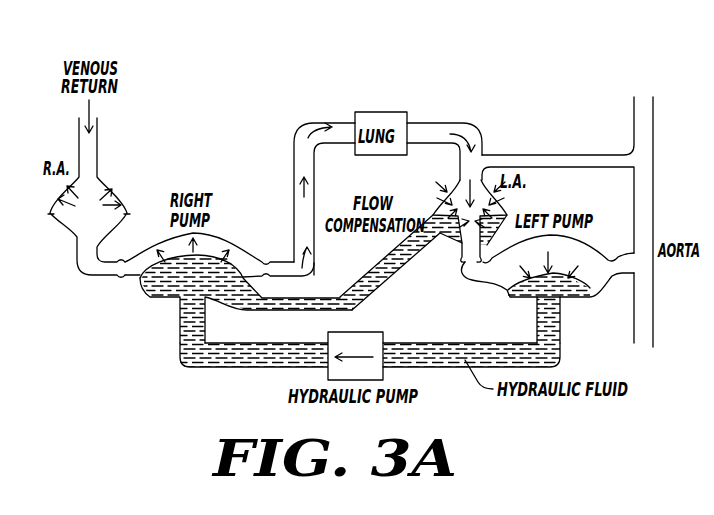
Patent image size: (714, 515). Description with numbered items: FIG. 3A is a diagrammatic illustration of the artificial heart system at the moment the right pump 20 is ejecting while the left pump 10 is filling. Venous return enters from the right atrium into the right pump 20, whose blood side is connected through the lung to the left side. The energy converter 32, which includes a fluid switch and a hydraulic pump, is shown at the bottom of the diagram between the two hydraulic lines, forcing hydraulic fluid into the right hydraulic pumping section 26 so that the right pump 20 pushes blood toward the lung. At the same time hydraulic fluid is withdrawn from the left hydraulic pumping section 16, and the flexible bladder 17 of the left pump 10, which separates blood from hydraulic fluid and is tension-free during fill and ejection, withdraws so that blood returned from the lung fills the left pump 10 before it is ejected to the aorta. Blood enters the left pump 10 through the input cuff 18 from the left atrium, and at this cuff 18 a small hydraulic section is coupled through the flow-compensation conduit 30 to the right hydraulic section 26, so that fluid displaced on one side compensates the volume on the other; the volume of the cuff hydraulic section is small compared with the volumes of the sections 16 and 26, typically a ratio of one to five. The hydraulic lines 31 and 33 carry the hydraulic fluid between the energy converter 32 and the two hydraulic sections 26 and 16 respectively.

The left side pump 10 is at (534, 260).
The hydraulic pumping section 16 is at (563, 298).
The flexible bladder 17 is at (577, 242).
The input cuff 18 is at (510, 208).
The right side pump 20 is at (212, 249).
The hydraulic pumping section 26 is at (163, 293).
The conduit 30 is at (370, 282).
The hydraulic line 31 is at (253, 350).
The energy converter 32 is at (360, 338).
The hydraulic line 33 is at (492, 357).